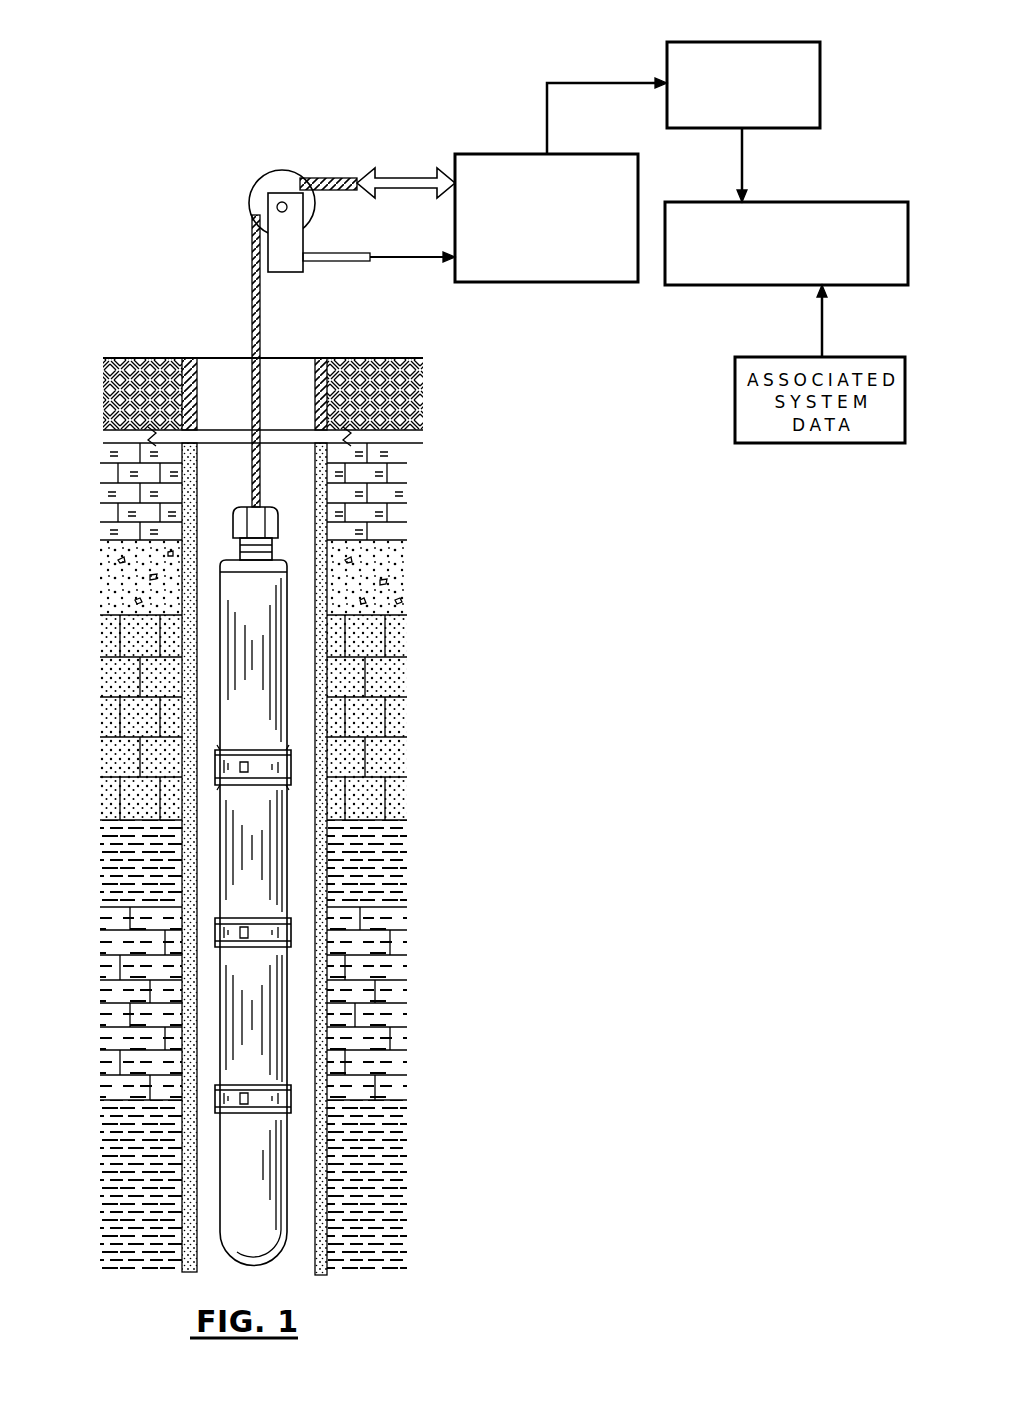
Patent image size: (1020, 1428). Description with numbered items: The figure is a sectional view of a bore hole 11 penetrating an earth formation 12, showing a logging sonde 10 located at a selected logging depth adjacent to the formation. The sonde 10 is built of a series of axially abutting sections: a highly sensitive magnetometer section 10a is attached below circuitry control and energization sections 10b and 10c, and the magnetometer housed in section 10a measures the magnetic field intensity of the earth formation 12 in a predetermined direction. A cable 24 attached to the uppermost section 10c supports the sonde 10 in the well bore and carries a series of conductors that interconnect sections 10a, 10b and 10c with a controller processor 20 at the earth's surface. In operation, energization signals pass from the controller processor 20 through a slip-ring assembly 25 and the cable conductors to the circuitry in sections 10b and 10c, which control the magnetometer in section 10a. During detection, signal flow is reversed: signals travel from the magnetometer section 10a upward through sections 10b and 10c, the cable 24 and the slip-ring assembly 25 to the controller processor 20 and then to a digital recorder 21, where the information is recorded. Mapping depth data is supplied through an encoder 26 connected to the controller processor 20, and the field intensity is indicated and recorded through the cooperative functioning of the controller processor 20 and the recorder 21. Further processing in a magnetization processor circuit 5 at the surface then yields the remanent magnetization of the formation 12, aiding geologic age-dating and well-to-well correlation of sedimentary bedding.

The magnetization processor circuit 5 is at (845, 200).
The logging sonde 10 is at (252, 855).
The magnetometer section 10a is at (268, 1030).
The circuitry control and energization section 10b is at (240, 857).
The circuitry control and energization section 10c is at (240, 708).
The bore hole 11 is at (225, 377).
The earth formation 12 is at (418, 443).
The controller processor 20 is at (540, 282).
The digital recorder 21 is at (822, 85).
The cable 24 is at (252, 277).
The slip-ring assembly 25 is at (272, 187).
The encoder 26 is at (285, 258).